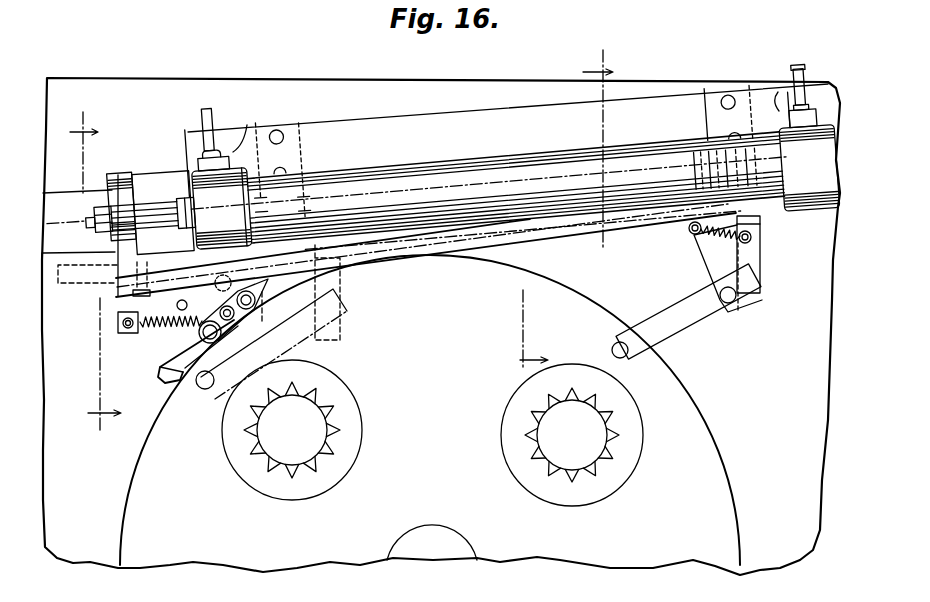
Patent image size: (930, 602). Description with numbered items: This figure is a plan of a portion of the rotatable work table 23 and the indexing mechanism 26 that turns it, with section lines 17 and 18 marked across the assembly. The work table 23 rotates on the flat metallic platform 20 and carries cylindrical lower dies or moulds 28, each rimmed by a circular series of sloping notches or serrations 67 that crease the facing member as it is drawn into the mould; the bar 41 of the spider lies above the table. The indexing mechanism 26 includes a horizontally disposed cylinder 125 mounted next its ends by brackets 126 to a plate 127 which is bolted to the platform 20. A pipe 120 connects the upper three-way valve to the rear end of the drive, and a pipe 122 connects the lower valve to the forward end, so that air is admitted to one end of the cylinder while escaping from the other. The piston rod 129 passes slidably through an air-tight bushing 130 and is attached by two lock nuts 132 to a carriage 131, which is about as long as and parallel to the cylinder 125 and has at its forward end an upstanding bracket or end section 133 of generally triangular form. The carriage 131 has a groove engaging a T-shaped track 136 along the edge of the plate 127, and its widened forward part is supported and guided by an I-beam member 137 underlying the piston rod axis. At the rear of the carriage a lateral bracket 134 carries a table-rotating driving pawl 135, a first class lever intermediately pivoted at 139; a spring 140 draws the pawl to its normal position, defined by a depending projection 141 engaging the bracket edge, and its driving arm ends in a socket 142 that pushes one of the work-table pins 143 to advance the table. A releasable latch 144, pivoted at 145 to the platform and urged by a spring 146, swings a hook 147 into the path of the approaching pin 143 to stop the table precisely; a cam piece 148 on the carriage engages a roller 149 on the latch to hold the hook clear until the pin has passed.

The platform 20 is at (131, 78).
The work table 23 is at (733, 490).
The bar 41 is at (471, 549).
The notches or serrations 67 is at (347, 430).
The lower female dies or moulds 28 is at (323, 457).
The plate 127 is at (373, 120).
The cylinder 125 is at (445, 162).
The indexing mechanism 26 is at (160, 159).
The pipe 122 is at (212, 108).
The pipe 120 is at (798, 74).
The brackets 126 is at (247, 125).
The upstanding bracket or end section 133 is at (118, 180).
The piston rod 129 is at (158, 210).
The bushing 130 is at (187, 218).
The lock nuts 132 is at (108, 212).
The carriage 131 is at (172, 168).
The I-beam member 137 is at (76, 288).
The T-shaped track 136 is at (767, 220).
The spring 140 is at (720, 233).
The depending projection 141 is at (752, 247).
The lateral bracket 134 is at (707, 267).
The table-rotating driving pawl 135 is at (683, 337).
The socket 142 is at (630, 343).
The pivot 139 is at (734, 298).
The work-table pins 143 is at (614, 349).
The hook 147 is at (177, 372).
The cam piece 148 is at (266, 281).
The roller 149 is at (300, 320).
The spring 146 is at (160, 328).
The pivot 145 is at (200, 325).
The releasable latch 144 is at (157, 375).
The section line 17 is at (100, 276).
The section line 18 is at (572, 204).